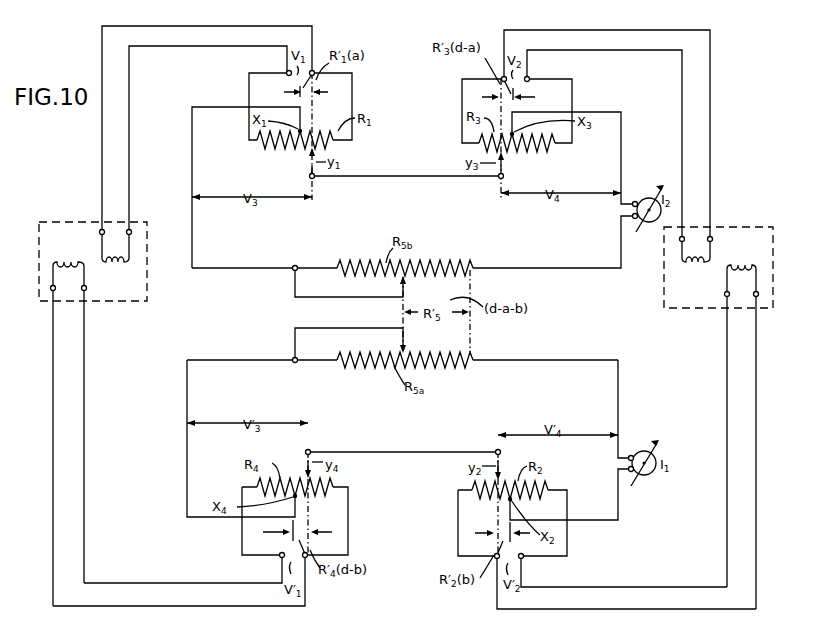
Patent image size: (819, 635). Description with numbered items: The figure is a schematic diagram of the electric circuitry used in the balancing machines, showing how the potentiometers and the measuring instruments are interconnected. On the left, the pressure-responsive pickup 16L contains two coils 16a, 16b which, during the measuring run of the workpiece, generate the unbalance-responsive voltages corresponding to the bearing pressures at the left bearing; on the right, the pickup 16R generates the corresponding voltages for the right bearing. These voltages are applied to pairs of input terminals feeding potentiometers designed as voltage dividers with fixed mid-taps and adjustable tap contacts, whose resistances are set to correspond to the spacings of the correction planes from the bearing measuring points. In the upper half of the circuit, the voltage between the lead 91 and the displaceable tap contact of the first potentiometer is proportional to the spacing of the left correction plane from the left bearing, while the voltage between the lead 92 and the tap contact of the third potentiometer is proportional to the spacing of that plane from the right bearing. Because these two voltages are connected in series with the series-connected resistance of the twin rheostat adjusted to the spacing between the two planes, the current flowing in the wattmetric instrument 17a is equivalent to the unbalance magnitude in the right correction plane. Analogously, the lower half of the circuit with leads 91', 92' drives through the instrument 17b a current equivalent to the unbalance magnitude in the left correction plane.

The left pickup 16L is at (75, 222).
The right pickup 16R is at (764, 216).
The coil 16a is at (116, 263).
The coil 16b is at (68, 262).
The lead 91 is at (245, 187).
The lead 91' is at (222, 438).
The lead 92 is at (561, 190).
The lead 92' is at (579, 443).
The wattmetric measuring instrument 17a is at (641, 221).
The wattmetric measuring instrument 17b is at (641, 476).